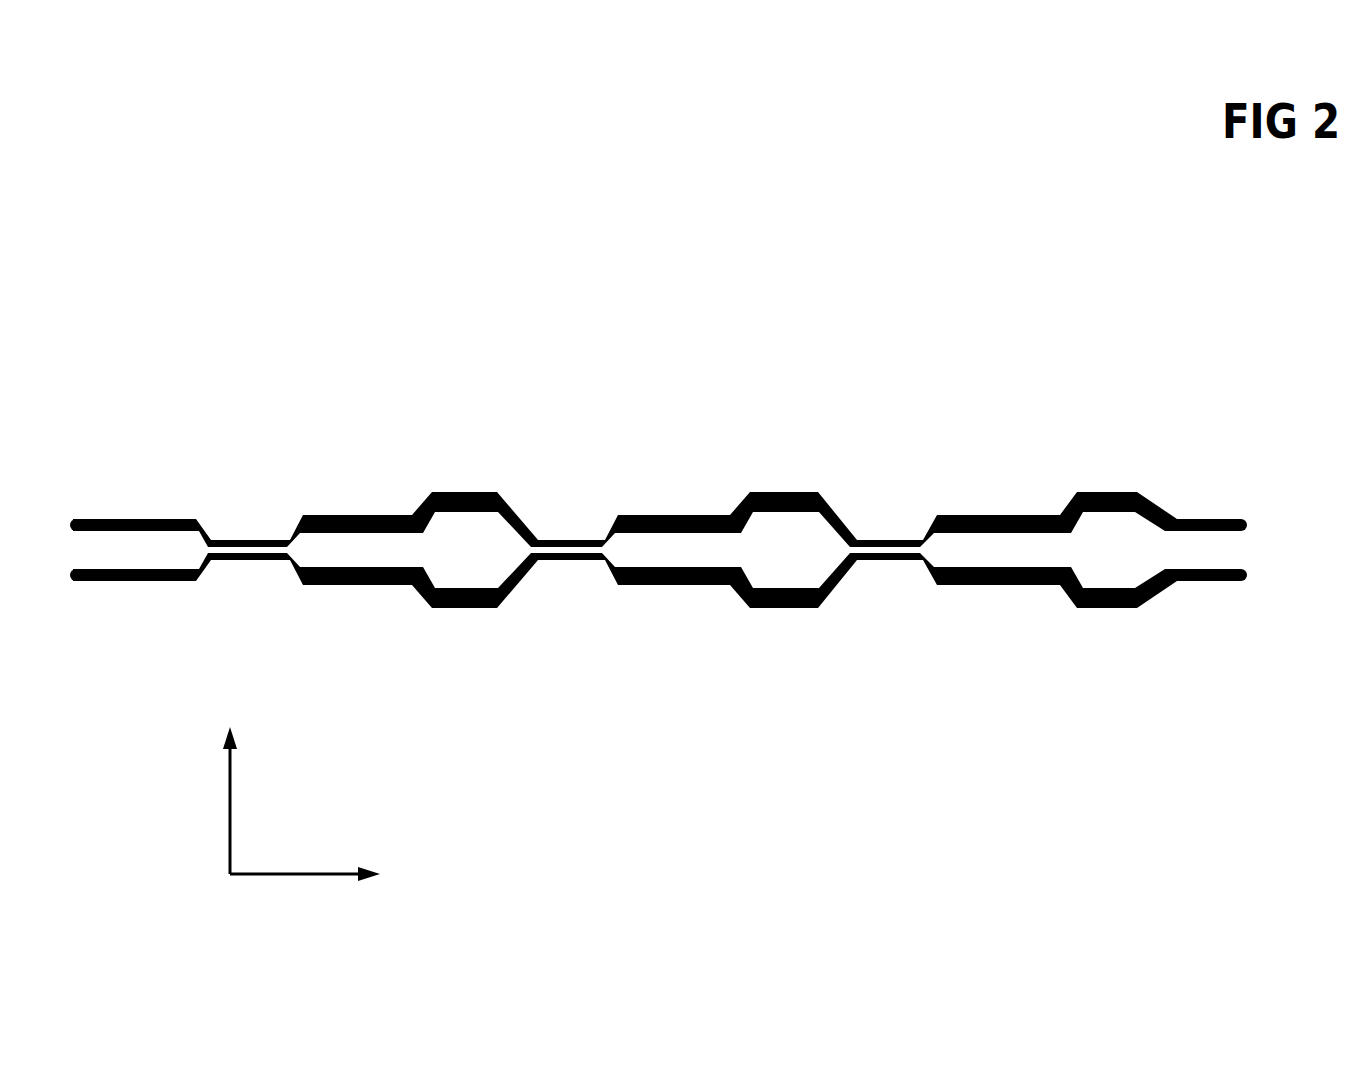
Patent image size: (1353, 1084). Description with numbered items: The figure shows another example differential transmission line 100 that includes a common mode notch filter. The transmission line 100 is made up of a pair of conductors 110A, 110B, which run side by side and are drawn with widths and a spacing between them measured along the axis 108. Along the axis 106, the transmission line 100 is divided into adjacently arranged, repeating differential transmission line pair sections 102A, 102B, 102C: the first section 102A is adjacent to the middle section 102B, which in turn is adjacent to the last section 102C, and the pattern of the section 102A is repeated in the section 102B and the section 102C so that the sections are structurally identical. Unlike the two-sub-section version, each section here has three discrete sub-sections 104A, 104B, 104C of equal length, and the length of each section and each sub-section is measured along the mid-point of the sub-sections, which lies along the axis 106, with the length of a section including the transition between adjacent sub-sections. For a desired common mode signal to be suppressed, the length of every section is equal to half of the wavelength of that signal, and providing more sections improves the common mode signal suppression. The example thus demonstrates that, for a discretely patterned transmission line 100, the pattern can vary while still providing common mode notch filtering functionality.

The differential transmission line 100 is at (700, 552).
The first differential transmission line pair section 102A is at (364, 552).
The middle differential transmission line pair section 102B is at (530, 497).
The last differential transmission line pair section 102C is at (1031, 528).
The first sub-section 104A is at (192, 603).
The second sub-section 104B is at (303, 603).
The third sub-section 104C is at (477, 574).
The axis 106 is at (300, 873).
The axis 108 is at (227, 770).
The first conductor 110A is at (101, 519).
The second conductor 110B is at (103, 582).